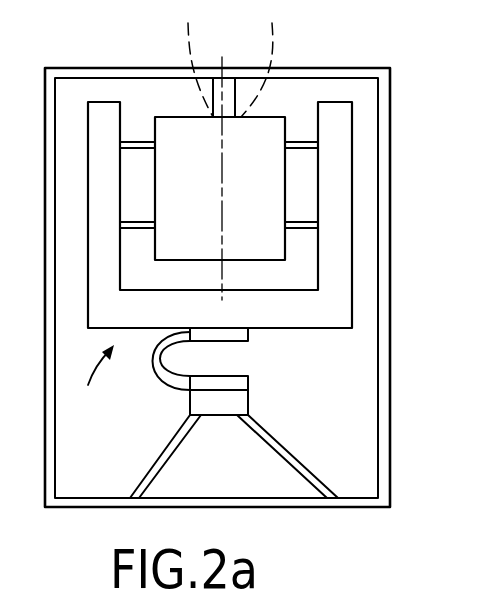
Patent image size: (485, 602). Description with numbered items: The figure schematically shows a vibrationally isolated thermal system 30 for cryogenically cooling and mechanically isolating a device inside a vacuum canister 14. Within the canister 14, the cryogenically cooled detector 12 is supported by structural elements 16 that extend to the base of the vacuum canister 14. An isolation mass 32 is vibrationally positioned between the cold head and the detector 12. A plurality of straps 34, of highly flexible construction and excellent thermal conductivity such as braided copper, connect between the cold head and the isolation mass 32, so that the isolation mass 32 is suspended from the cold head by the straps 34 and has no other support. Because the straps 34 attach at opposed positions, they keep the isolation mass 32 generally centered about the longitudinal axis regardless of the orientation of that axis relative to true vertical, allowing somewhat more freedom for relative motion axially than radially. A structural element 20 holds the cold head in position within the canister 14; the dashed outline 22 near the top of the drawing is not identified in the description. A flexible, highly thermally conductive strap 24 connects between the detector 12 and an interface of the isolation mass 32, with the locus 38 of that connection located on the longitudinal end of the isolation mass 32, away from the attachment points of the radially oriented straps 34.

The detector 12 is at (233, 403).
The vacuum canister 14 is at (390, 478).
The structural elements 16 is at (253, 444).
The structural element 20 is at (232, 96).
The spray pattern 22 is at (185, 42).
The flexible highly thermally conductive strap 24 is at (160, 363).
The vibrationally isolated thermal system 30 is at (89, 391).
The isolation mass 32 is at (333, 163).
The straps 34 is at (138, 143).
The locus of connection 38 is at (225, 327).